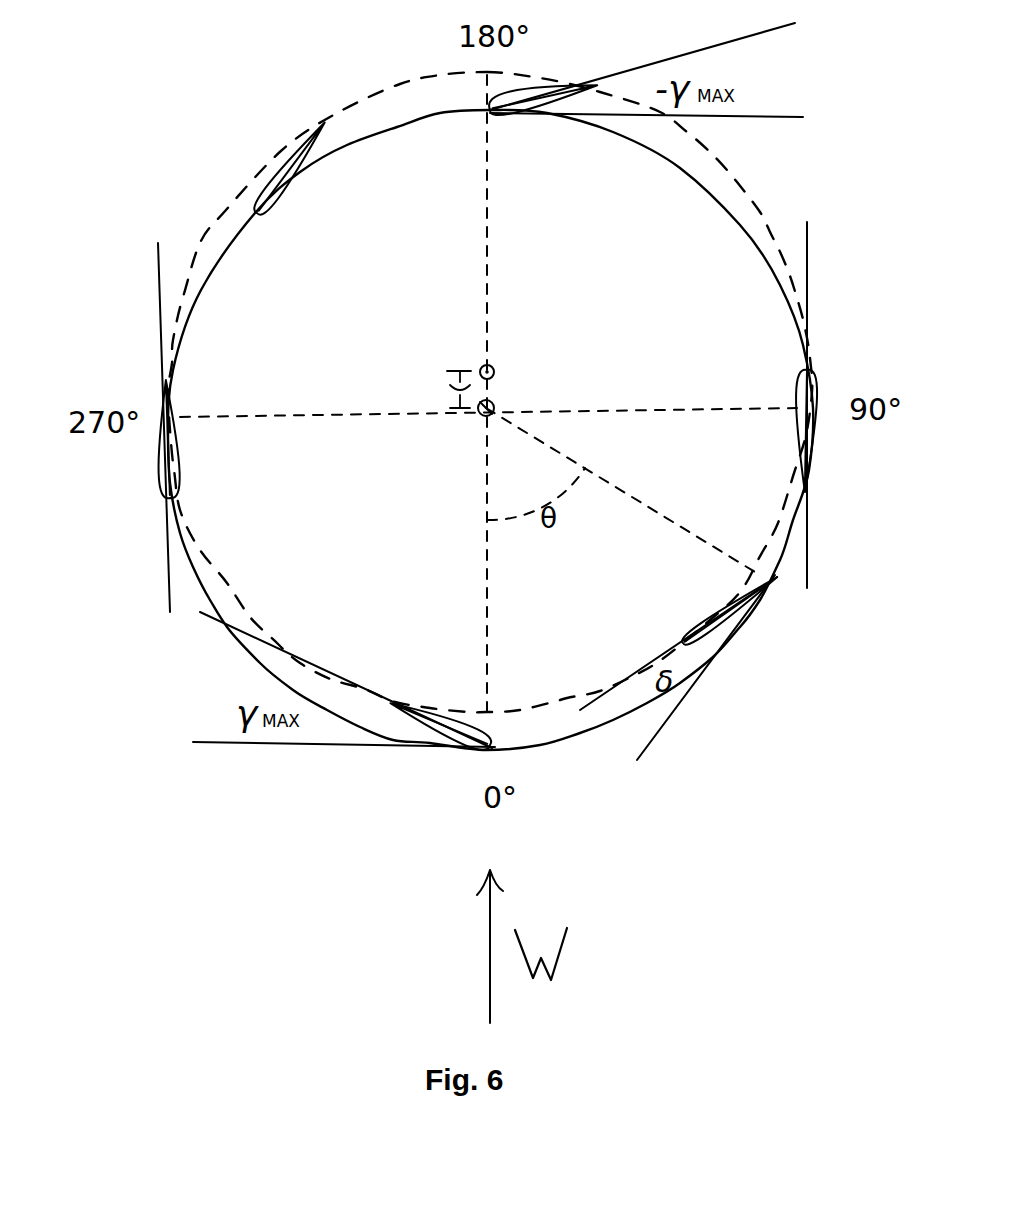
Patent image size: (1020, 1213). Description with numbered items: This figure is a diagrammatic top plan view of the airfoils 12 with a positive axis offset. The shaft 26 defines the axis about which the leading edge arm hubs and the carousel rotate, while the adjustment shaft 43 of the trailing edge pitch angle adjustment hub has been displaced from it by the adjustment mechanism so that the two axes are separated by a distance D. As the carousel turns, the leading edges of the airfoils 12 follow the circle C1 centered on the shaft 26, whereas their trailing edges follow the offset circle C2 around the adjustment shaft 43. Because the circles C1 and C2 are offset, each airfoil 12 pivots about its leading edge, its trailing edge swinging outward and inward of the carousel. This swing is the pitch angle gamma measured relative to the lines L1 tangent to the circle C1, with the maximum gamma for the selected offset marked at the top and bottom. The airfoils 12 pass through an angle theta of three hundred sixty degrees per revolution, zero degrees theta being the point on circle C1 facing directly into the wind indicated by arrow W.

The airfoil 12 is at (542, 88).
The shaft 26 is at (497, 404).
The adjustment shaft 43 is at (495, 370).
The tangent line L1 is at (155, 287).
The leading edge circle C1 is at (780, 570).
The trailing edge circle C2 is at (753, 199).